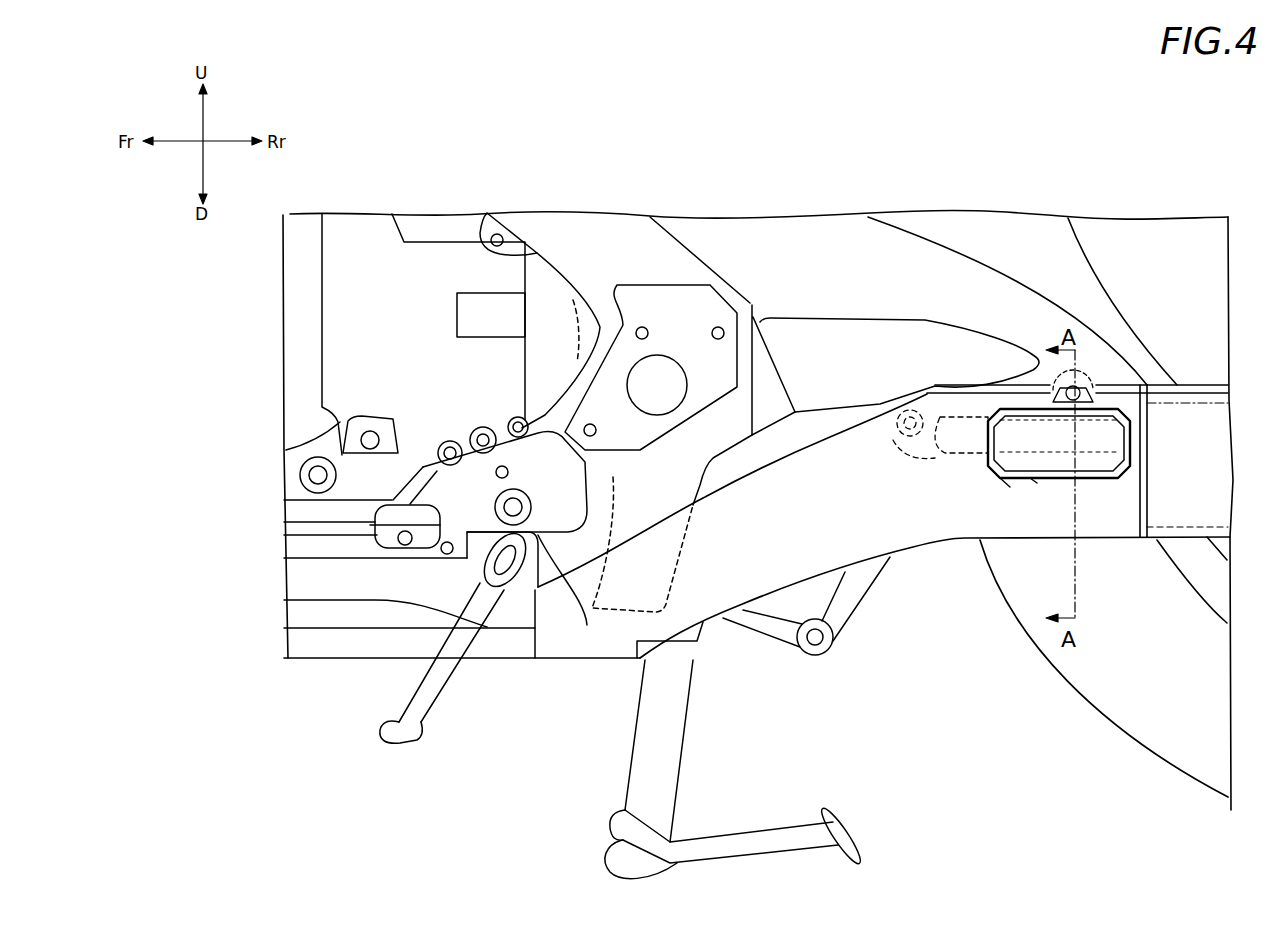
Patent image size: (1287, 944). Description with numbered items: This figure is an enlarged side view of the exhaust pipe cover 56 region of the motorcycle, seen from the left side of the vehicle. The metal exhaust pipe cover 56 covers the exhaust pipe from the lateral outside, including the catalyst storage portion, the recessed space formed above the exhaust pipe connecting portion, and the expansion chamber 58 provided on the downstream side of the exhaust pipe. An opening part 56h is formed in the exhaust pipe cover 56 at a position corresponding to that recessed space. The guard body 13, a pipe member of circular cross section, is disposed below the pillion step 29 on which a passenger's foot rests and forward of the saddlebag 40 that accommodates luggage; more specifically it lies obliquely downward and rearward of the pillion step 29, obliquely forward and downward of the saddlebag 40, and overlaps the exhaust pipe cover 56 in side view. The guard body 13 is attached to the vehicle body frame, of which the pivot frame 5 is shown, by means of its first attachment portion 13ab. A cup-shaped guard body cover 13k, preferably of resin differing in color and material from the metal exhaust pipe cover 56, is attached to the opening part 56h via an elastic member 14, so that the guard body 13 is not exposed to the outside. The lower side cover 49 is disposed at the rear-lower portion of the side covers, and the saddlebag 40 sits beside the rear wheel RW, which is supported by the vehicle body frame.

The pivot frame 5 is at (583, 612).
The guard body 13 is at (1060, 440).
The first attachment portion 13ab is at (923, 452).
The guard body cover 13k is at (1110, 465).
The elastic member 14 is at (1013, 487).
The pillion step 29 is at (810, 335).
The saddlebag 40 is at (1143, 285).
The lower side cover 49 is at (1005, 310).
The exhaust pipe cover 56 is at (913, 545).
The opening part 56h is at (1037, 483).
The expansion chamber 58 is at (1190, 525).
The rear wheel RW is at (1125, 700).